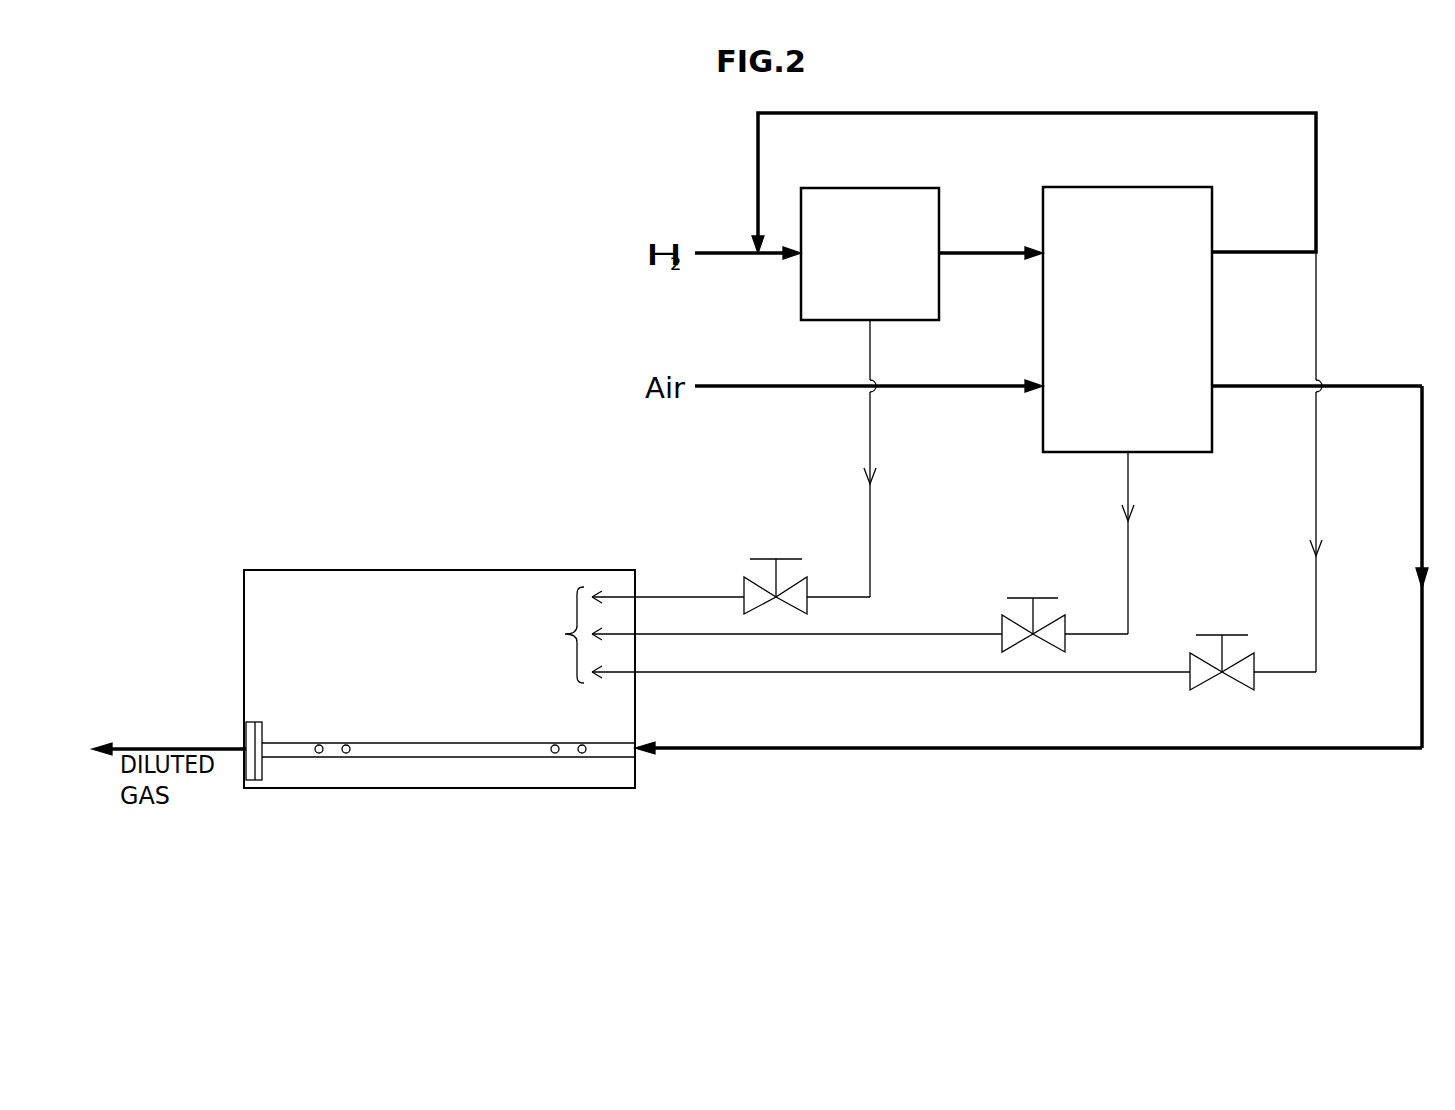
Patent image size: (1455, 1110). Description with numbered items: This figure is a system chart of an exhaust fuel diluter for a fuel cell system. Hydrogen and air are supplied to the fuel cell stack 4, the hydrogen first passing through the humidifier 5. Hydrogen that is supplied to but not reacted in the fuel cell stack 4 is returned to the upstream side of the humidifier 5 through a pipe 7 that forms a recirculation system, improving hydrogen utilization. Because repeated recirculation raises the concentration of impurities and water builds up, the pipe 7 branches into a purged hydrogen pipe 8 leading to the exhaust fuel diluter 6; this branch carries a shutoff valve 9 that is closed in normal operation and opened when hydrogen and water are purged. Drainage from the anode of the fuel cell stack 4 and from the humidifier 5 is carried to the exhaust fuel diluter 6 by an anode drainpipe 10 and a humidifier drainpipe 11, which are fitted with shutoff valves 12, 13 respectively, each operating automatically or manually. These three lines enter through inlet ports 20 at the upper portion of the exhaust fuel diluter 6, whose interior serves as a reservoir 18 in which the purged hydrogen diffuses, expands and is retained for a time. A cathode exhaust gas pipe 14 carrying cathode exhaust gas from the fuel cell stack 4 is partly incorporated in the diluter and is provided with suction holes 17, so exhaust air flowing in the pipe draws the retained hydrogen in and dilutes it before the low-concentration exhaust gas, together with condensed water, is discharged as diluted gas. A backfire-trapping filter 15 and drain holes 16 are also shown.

The fuel cell stack 4 is at (1163, 187).
The humidifier 5 is at (892, 188).
The exhaust fuel diluter 6 is at (347, 570).
The pipe 7 is at (1316, 175).
The purged hydrogen pipe 8 is at (1155, 672).
The shutoff valve 9 is at (1233, 685).
The anode drainpipe 10 is at (900, 634).
The humidifier drainpipe 11 is at (683, 597).
The shutoff valve 12 is at (1065, 628).
The shutoff valve 13 is at (807, 590).
The cathode exhaust gas pipe 14 is at (1422, 748).
The backfire-trapping filter 15 is at (262, 765).
The drain holes 16 is at (319, 757).
The suction holes 17 is at (555, 757).
The reservoir 18 is at (451, 686).
The inlet ports 20 is at (560, 635).